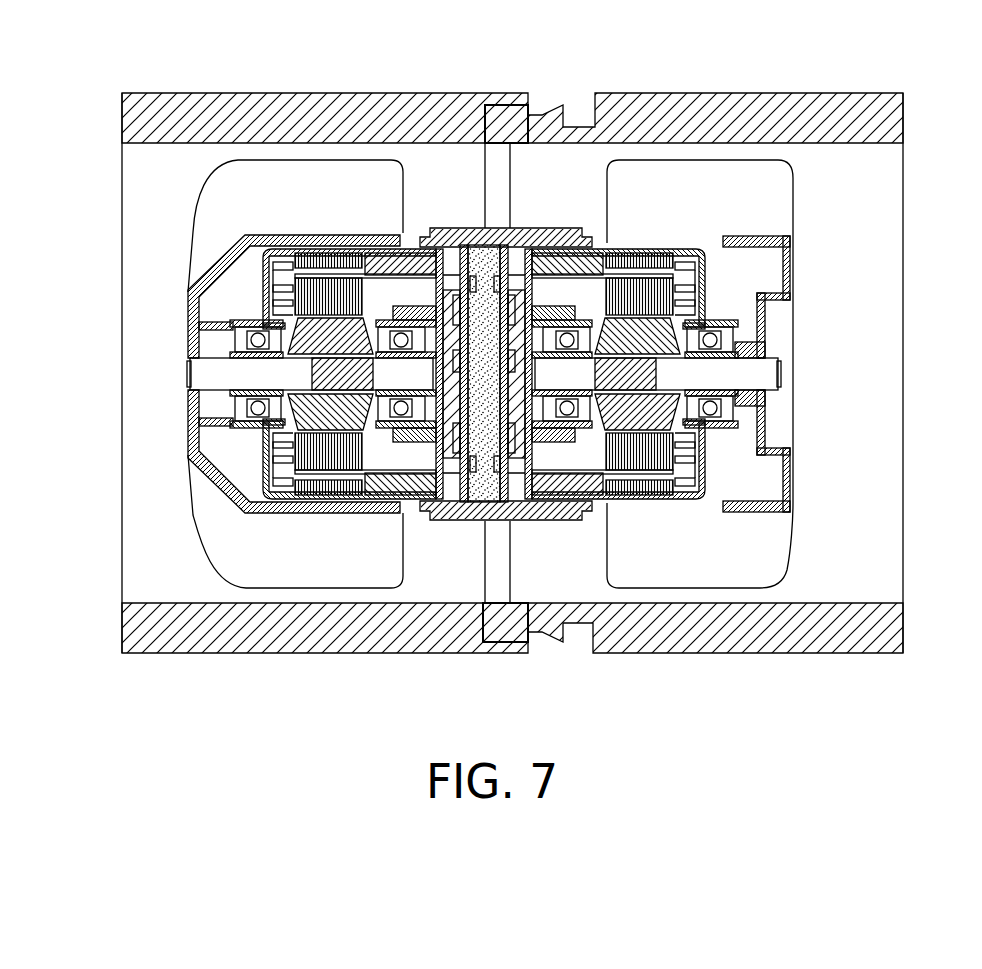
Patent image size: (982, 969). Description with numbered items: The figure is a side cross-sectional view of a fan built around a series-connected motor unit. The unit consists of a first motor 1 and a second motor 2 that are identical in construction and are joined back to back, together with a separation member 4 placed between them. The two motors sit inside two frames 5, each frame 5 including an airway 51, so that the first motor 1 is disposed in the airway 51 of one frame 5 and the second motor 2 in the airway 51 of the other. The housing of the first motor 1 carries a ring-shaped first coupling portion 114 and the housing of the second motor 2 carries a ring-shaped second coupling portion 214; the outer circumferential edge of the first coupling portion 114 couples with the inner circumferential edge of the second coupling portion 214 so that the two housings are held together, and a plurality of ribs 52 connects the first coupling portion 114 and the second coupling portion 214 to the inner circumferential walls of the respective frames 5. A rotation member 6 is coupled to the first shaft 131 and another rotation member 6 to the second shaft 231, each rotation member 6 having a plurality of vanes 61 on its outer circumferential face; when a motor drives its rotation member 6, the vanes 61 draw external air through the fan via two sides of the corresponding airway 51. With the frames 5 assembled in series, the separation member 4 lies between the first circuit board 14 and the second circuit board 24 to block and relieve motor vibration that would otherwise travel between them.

The first motor 1 is at (265, 373).
The second motor 2 is at (729, 368).
The separation member 4 is at (480, 503).
The frame 5 is at (165, 105).
The airway 51 is at (153, 483).
The ribs 52 is at (462, 173).
The rotation member 6 is at (208, 273).
The vanes 61 is at (780, 187).
The first coupling portion 114 is at (444, 228).
The first circuit board 14 is at (460, 486).
The first shaft 131 is at (208, 375).
The second coupling portion 214 is at (563, 228).
The second circuit board 24 is at (507, 488).
The second shaft 231 is at (758, 377).